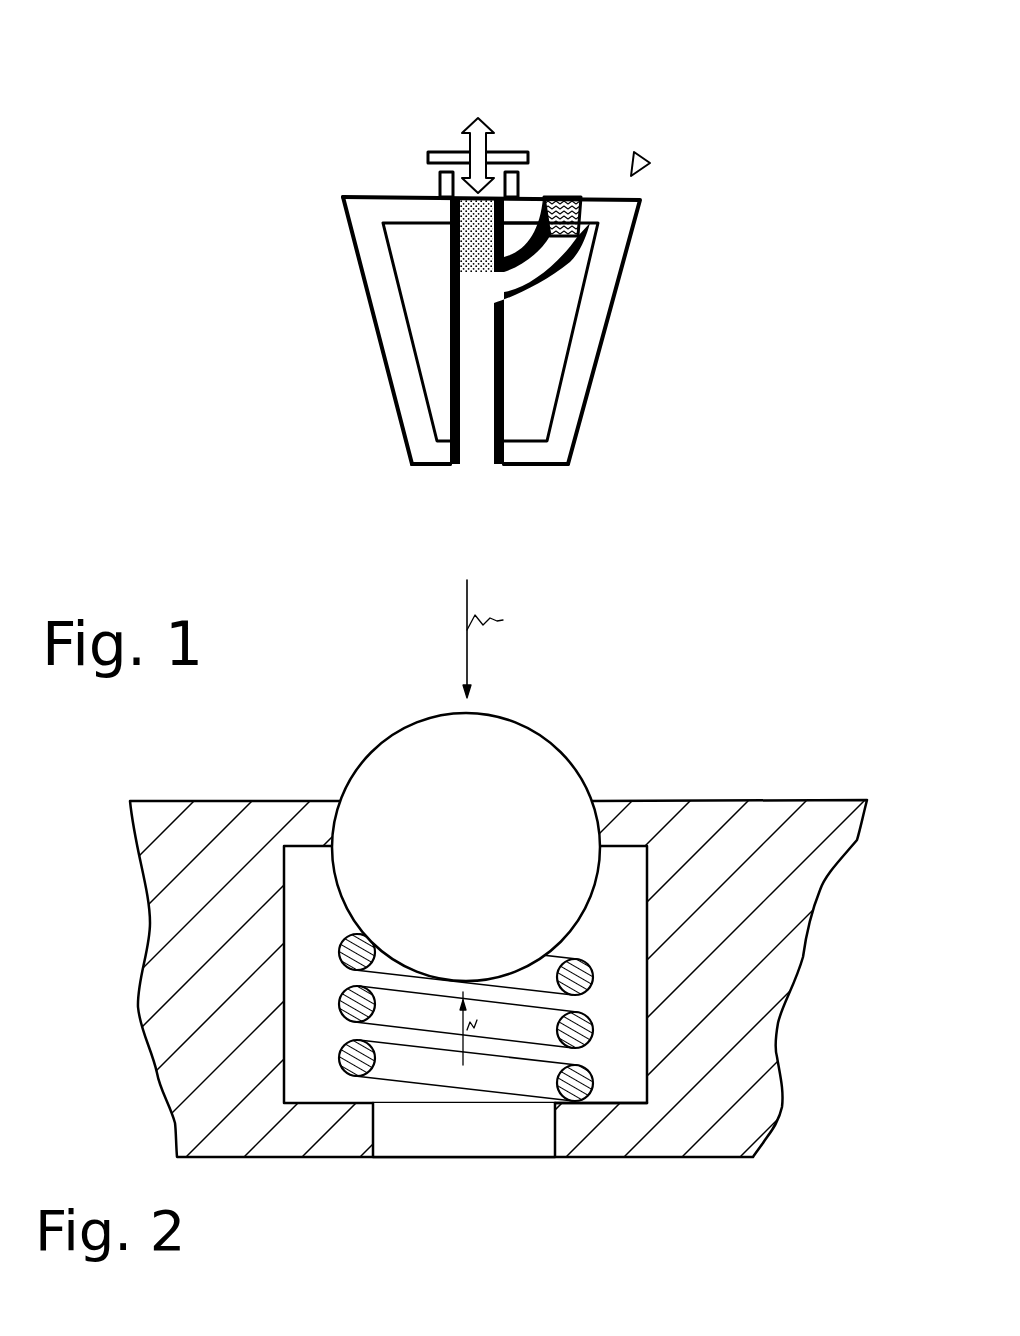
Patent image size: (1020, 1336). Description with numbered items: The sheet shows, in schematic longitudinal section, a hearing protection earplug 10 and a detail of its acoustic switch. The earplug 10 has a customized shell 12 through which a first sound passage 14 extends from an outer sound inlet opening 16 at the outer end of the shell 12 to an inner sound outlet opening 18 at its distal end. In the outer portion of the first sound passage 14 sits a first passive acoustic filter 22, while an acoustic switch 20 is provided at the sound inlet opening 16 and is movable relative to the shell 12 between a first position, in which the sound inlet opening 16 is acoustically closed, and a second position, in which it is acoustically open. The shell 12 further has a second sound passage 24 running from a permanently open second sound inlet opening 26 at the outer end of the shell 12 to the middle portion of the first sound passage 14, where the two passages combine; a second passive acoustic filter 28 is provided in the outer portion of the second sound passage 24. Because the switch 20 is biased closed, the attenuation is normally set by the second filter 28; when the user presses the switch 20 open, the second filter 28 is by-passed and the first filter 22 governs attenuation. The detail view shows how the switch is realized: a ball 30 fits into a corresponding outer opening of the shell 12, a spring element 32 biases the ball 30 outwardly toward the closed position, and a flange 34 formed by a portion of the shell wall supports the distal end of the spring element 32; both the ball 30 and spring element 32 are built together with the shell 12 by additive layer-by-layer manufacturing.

In FIG. 1, the hearing protection earplug 10 is at (648, 152).
In FIG. 1, the customized shell 12 is at (578, 365).
In FIG. 2, the customized shell 12 is at (777, 832).
In FIG. 1, the first sound passage 14 is at (473, 373).
In FIG. 2, the first sound passage 14 is at (458, 1127).
In FIG. 1, the outer sound inlet opening 16 is at (493, 177).
In FIG. 1, the inner sound outlet opening 18 is at (473, 460).
In FIG. 1, the acoustic switch 20 is at (450, 157).
In FIG. 2, the acoustic switch 20 is at (633, 770).
In FIG. 1, the first passive acoustic filter 22 is at (463, 227).
In FIG. 1, the second sound passage 24 is at (530, 268).
In FIG. 1, the second sound inlet opening 26 is at (565, 195).
In FIG. 1, the second passive acoustic filter 28 is at (573, 243).
In FIG. 2, the ball 30 is at (553, 777).
In FIG. 2, the spring element 32 is at (577, 1092).
In FIG. 2, the flange 34 is at (578, 1117).